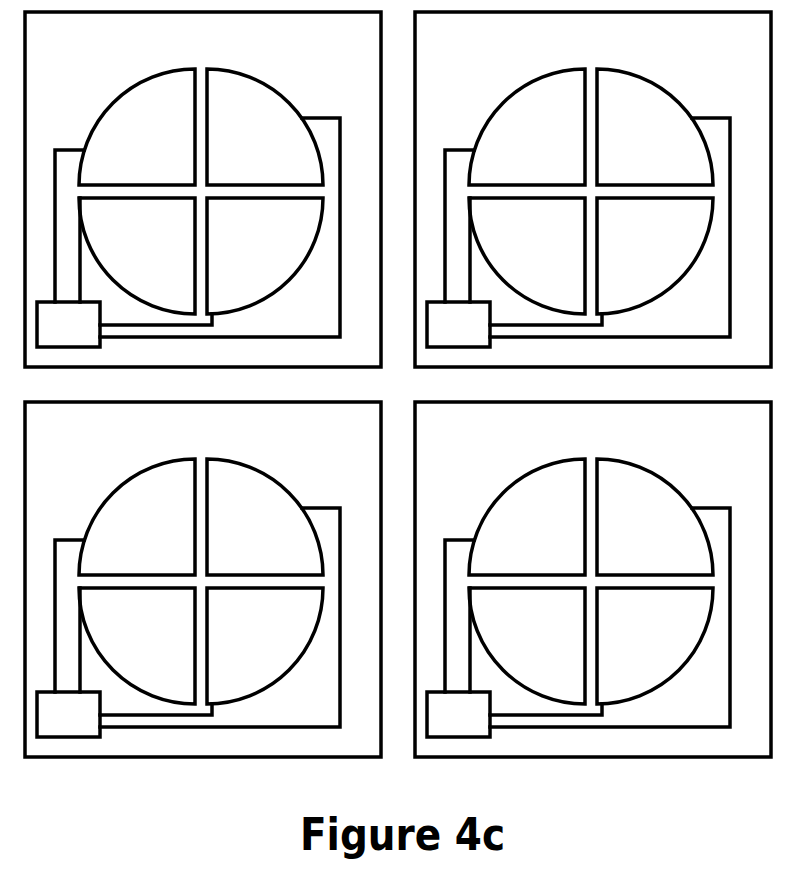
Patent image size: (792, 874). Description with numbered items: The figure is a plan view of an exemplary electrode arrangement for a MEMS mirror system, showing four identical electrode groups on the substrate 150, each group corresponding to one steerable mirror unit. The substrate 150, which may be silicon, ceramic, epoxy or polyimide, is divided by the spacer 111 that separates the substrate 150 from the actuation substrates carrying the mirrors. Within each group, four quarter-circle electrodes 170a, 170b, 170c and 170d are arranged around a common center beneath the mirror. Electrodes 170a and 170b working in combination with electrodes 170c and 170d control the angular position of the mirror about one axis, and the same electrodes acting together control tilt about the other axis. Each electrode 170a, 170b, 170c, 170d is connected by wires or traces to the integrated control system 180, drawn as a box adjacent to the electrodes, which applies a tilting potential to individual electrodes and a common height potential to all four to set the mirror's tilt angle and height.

The spacer 111 is at (400, 384).
The substrate 150 is at (398, 384).
The electrode 170a is at (460, 322).
The electrode 170b is at (460, 451).
The electrode 170c is at (332, 451).
The electrode 170d is at (332, 322).
The integrated control system 180 is at (383, 427).